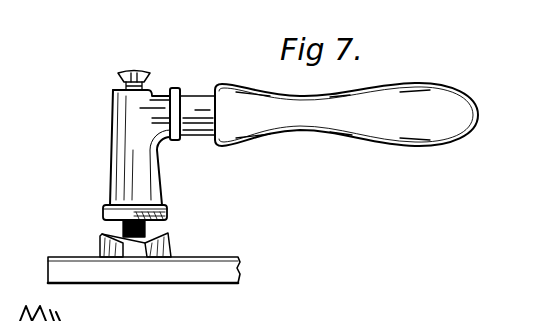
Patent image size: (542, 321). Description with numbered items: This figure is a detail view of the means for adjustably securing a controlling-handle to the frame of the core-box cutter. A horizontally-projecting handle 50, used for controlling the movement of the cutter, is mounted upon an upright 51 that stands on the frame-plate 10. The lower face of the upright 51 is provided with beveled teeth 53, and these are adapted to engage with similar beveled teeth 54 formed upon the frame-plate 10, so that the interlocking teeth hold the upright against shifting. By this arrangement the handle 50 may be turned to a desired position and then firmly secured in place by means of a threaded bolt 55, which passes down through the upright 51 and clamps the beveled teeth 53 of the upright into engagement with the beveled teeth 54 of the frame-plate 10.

The frame-plate 10 is at (222, 271).
The handle 50 is at (320, 115).
The upright 51 is at (135, 173).
The beveled teeth 53 is at (150, 231).
The beveled teeth 54 is at (142, 238).
The threaded bolt 55 is at (126, 88).